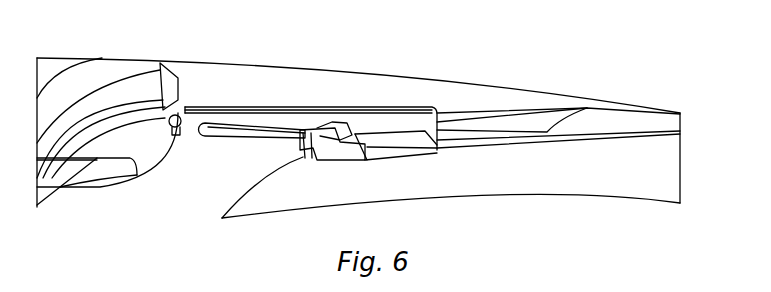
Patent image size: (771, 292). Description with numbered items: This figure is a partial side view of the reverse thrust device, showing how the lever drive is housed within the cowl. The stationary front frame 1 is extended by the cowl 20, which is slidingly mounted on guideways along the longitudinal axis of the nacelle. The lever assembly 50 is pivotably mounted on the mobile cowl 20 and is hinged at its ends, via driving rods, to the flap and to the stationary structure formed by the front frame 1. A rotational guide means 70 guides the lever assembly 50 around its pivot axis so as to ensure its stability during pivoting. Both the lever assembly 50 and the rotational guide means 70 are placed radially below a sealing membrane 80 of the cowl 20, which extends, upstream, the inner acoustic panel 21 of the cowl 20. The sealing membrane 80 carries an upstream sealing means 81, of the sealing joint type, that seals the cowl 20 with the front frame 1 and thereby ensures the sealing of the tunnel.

The front frame 1 is at (75, 90).
The upstream sealing means 81 is at (163, 115).
The sealing membrane 80 is at (265, 120).
The rotational guide means 70 is at (220, 140).
The lever assembly 50 is at (298, 157).
The cowl 20 is at (487, 98).
The inner acoustic panel 21 is at (455, 170).